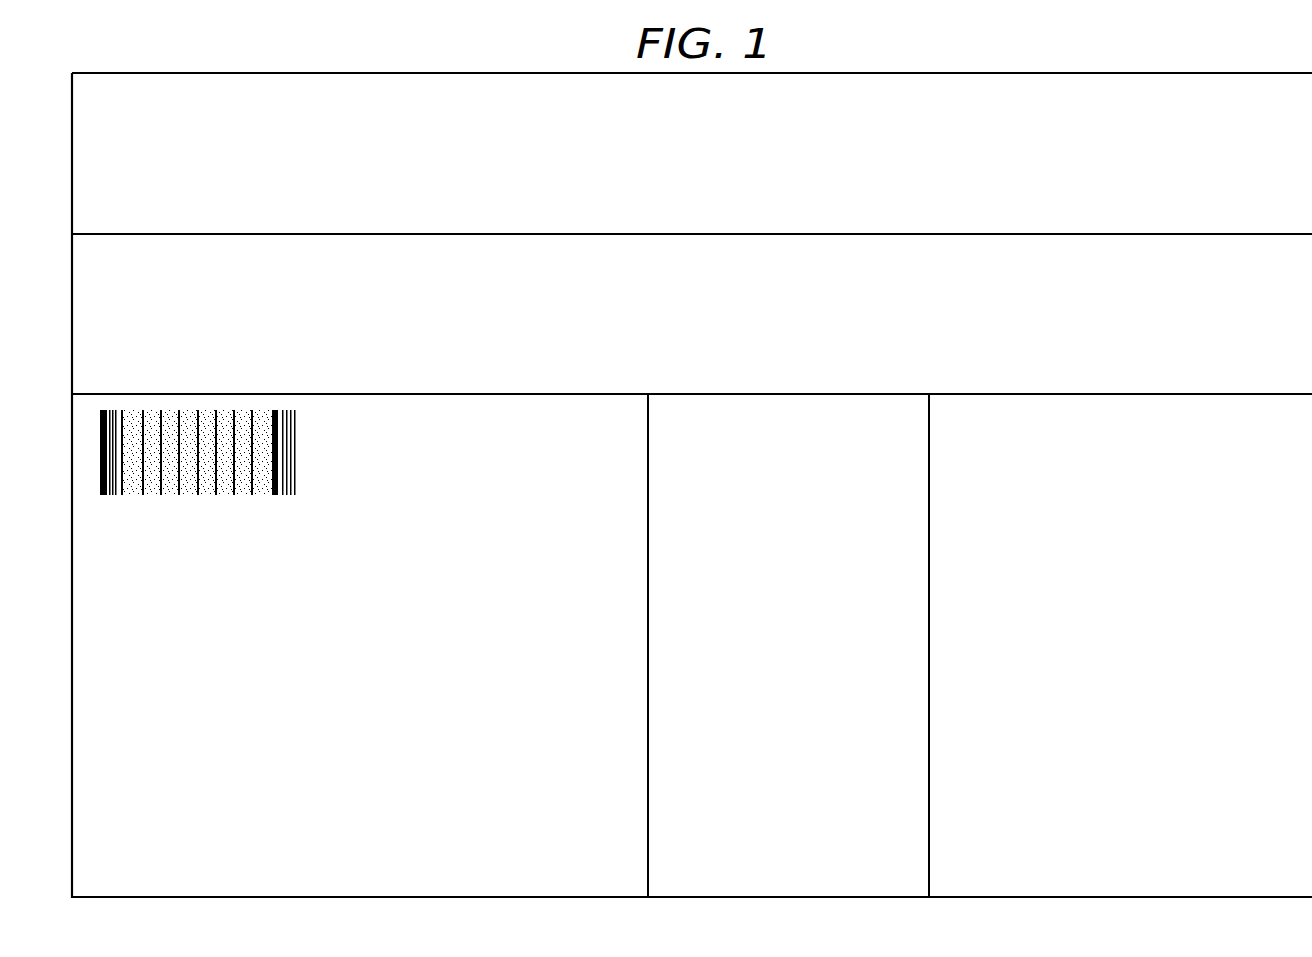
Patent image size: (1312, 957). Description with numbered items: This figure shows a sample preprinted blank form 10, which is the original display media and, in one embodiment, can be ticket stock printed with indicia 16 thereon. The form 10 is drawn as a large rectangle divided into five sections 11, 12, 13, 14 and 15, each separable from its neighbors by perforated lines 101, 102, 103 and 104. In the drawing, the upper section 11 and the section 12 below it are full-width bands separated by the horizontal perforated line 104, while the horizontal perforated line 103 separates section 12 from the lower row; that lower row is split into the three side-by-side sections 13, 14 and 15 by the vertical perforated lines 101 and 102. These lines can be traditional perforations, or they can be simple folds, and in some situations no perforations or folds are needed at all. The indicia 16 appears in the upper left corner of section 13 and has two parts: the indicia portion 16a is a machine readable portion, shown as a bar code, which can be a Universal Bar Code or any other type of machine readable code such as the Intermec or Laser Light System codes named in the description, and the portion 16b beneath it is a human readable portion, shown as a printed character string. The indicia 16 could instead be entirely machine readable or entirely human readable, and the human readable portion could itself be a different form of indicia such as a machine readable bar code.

The form 10 is at (855, 68).
The section 11 is at (717, 166).
The section 12 is at (717, 326).
The section 13 is at (374, 654).
The section 14 is at (804, 653).
The section 15 is at (1149, 652).
The indicia 16 is at (235, 493).
The indicia portion 16a is at (276, 442).
The human readable portion 16b is at (190, 522).
The perforated line 101 is at (648, 745).
The perforated line 102 is at (929, 745).
The perforated line 103 is at (565, 393).
The perforated line 104 is at (565, 233).